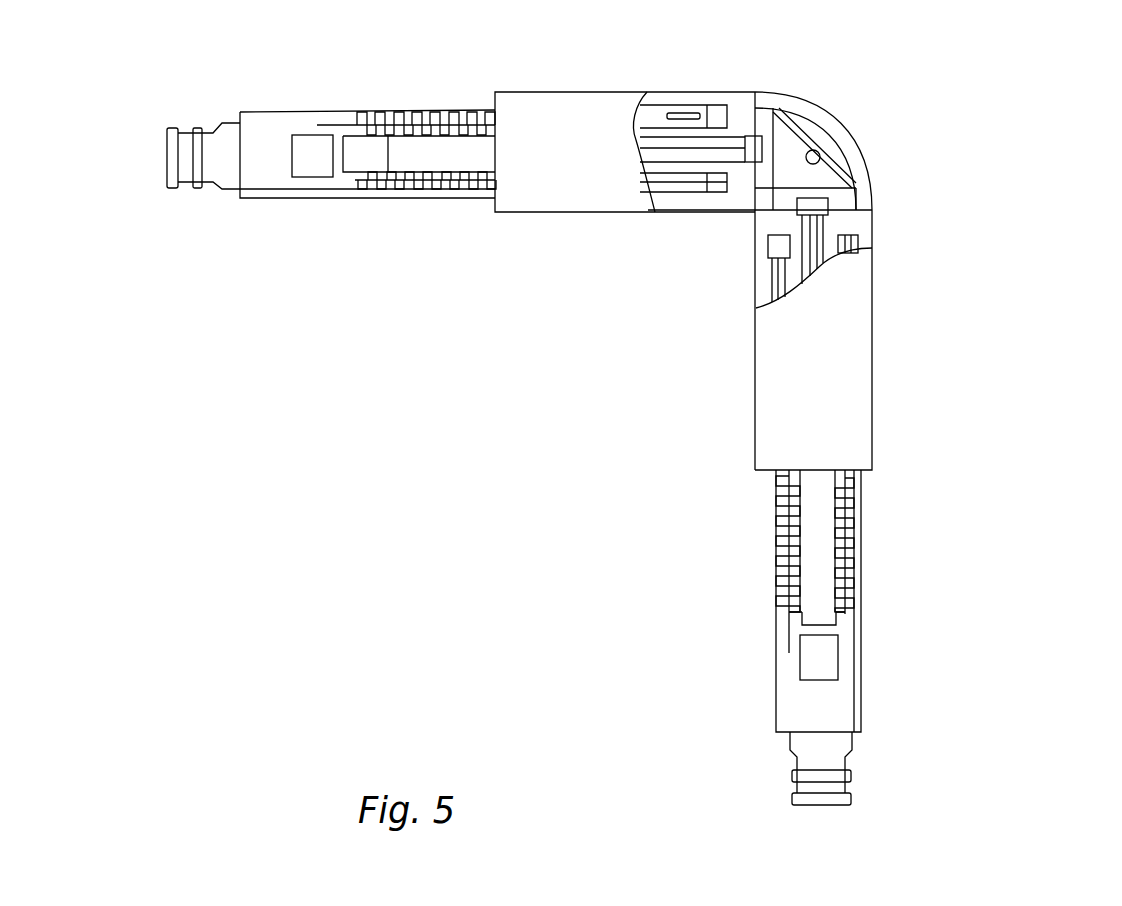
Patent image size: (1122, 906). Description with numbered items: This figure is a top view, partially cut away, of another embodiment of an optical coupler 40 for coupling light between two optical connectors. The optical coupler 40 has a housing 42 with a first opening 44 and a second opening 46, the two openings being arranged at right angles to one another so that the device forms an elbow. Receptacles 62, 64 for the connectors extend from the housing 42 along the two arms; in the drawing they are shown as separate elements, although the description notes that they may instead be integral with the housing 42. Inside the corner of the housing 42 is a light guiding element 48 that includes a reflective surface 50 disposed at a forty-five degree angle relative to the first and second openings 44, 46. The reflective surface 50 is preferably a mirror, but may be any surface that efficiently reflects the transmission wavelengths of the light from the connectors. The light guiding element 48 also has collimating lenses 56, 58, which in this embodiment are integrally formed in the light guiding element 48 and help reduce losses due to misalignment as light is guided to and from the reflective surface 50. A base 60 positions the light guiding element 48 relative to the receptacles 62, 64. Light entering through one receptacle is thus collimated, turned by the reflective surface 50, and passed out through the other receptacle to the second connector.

The optical coupler 40 is at (623, 409).
The housing 42 is at (875, 242).
The first opening 44 is at (490, 200).
The second opening 46 is at (867, 485).
The light guiding element 48 is at (820, 124).
The reflective surface 50 is at (819, 153).
The collimating lens 56 is at (750, 136).
The collimating lens 58 is at (828, 212).
The base 60 is at (806, 97).
The receptacle 62 is at (582, 92).
The receptacle 64 is at (860, 363).